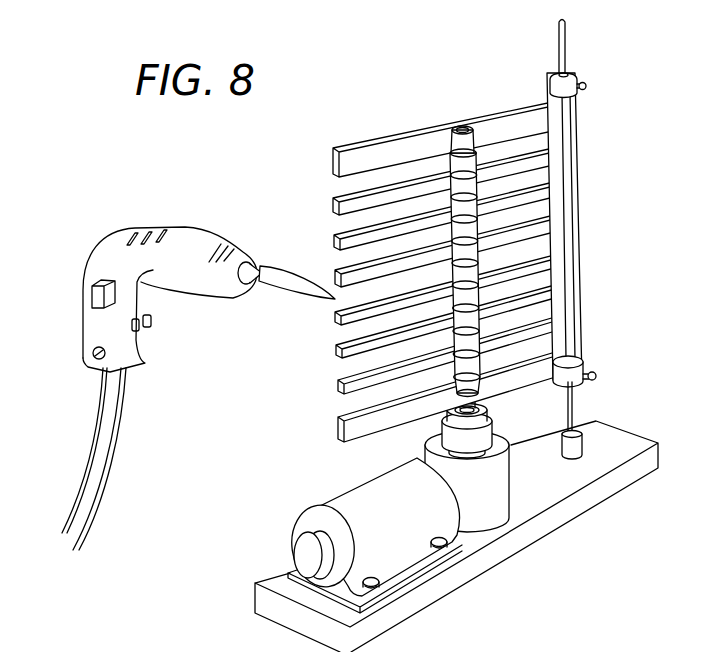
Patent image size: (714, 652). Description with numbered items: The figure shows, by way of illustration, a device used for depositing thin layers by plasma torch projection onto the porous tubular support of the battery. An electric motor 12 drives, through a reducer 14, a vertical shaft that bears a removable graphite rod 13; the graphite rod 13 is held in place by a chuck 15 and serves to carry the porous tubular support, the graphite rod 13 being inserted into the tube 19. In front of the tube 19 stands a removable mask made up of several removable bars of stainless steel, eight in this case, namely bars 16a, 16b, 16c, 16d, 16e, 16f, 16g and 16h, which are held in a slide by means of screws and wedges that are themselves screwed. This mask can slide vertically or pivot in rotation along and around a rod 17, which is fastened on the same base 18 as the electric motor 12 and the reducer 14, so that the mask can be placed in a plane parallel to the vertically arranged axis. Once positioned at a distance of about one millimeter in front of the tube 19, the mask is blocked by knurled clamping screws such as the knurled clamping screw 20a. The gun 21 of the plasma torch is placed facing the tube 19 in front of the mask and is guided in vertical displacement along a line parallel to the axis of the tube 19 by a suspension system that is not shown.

The electric motor 12 is at (349, 496).
The removable graphite rod 13 is at (471, 401).
The reducer 14 is at (502, 483).
The chuck 15 is at (485, 432).
The removable bar of stainless steel 16a is at (333, 160).
The removable bar of stainless steel 16b is at (333, 205).
The removable bar of stainless steel 16c is at (334, 242).
The removable bar of stainless steel 16d is at (335, 278).
The removable bar of stainless steel 16e is at (335, 318).
The removable bar of stainless steel 16f is at (336, 352).
The removable bar of stainless steel 16g is at (338, 386).
The removable bar of stainless steel 16h is at (339, 428).
The rod 17 is at (577, 244).
The base 18 is at (492, 571).
The tube 19 is at (463, 128).
The knurled clamping screw 20a is at (586, 86).
The gun 21 is at (184, 242).